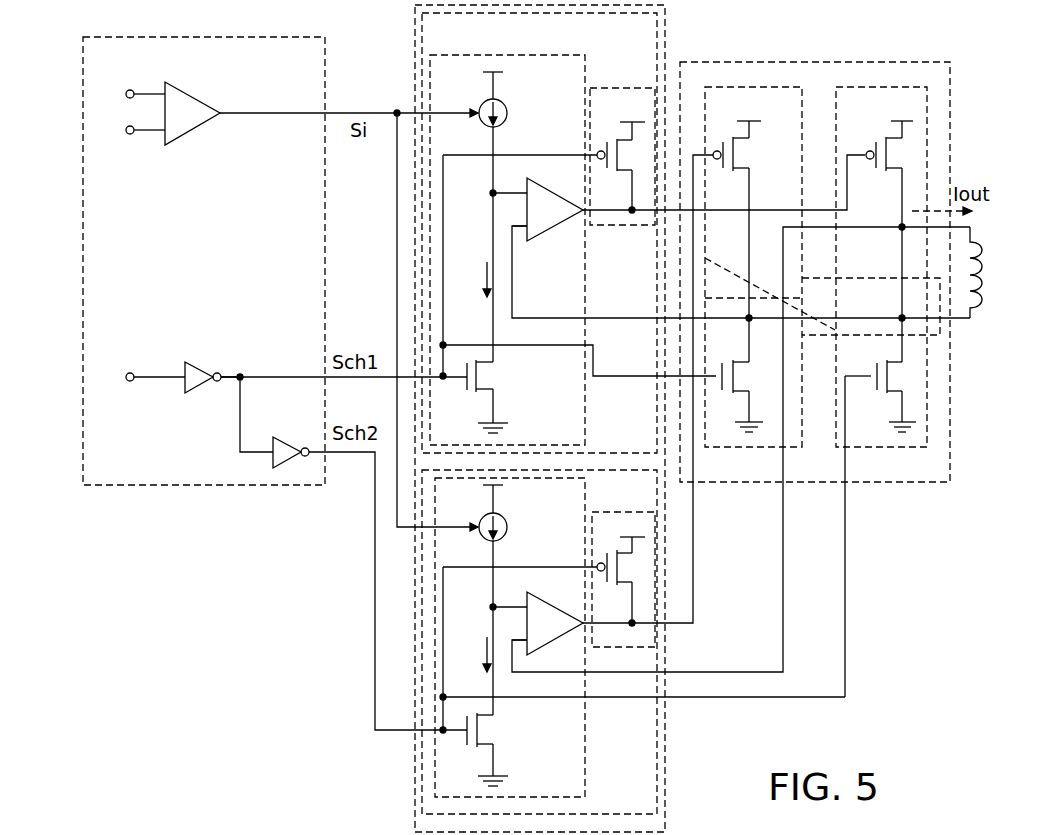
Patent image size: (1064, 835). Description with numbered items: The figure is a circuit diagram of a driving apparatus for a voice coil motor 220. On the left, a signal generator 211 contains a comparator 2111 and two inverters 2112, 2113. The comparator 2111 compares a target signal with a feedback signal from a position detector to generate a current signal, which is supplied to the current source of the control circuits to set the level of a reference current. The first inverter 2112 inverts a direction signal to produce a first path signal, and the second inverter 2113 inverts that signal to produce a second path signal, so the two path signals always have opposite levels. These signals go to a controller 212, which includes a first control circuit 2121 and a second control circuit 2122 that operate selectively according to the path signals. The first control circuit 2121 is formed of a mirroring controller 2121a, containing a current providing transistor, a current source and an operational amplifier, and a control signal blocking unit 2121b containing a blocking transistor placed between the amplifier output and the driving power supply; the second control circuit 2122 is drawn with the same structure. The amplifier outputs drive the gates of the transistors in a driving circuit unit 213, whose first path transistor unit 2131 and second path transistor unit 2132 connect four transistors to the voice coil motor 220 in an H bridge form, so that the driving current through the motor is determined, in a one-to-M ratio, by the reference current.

The signal generator 211 is at (137, 487).
The comparator 2111 is at (198, 78).
The first inverter 2112 is at (190, 362).
The second inverter 2113 is at (280, 437).
The controller 212 is at (413, 38).
The first control circuit 2121 is at (422, 80).
The mirroring controller 2121a is at (450, 55).
The control signal blocking unit 2121b is at (612, 88).
The second control circuit 2122 is at (415, 797).
The driving circuit unit 213 is at (912, 485).
The first path transistor unit 2131 is at (862, 87).
The second path transistor unit 2132 is at (743, 87).
The voice coil motor 220 is at (984, 268).